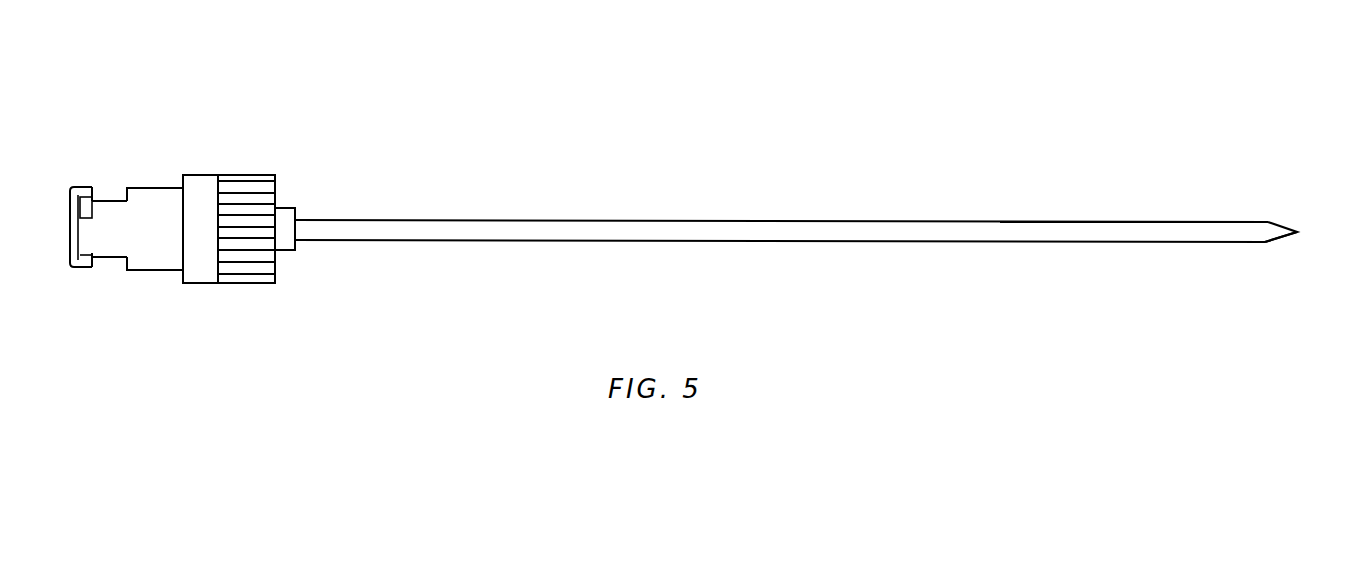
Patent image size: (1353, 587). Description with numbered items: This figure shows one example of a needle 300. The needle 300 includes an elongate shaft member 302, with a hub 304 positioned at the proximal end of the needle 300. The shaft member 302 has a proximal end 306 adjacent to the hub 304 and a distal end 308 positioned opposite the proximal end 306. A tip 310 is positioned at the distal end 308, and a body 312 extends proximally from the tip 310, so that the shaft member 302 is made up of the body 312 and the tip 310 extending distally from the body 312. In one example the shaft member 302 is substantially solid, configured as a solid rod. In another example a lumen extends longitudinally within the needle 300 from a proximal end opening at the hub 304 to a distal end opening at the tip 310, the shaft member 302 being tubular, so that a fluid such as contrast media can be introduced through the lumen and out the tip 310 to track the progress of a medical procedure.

The needle 300 is at (768, 94).
The elongate shaft member 302 is at (897, 220).
The hub 304 is at (193, 176).
The proximal end 306 is at (304, 217).
The distal end 308 is at (1270, 218).
The tip 310 is at (1287, 240).
The body 312 is at (1086, 222).